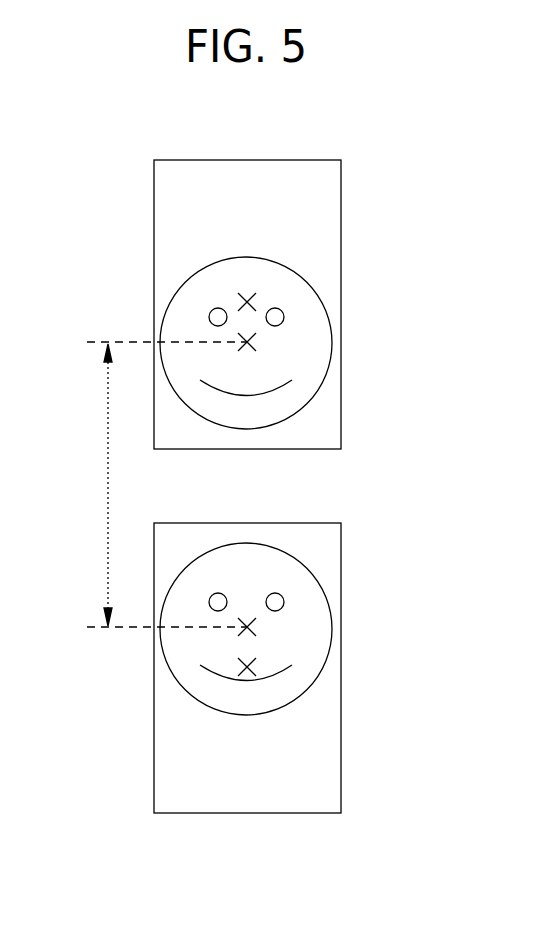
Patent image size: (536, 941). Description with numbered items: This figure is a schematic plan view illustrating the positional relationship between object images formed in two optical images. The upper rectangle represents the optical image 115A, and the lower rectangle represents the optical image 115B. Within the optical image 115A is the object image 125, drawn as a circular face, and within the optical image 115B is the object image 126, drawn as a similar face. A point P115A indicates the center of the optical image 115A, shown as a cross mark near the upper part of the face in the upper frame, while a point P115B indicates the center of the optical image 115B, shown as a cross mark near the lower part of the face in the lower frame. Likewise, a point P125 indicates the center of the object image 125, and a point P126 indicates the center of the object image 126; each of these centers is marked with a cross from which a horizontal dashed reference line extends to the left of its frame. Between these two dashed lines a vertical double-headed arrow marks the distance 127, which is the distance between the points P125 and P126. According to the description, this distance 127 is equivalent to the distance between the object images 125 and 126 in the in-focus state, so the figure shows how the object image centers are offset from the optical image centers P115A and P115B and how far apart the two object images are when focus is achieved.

The optical image 115A is at (341, 205).
The object image 125 is at (325, 307).
The point P125 is at (250, 342).
The point P115A is at (240, 304).
The distance 127 is at (152, 484).
The optical image 115B is at (341, 760).
The object image 126 is at (318, 580).
The point P126 is at (250, 627).
The point P115B is at (240, 670).